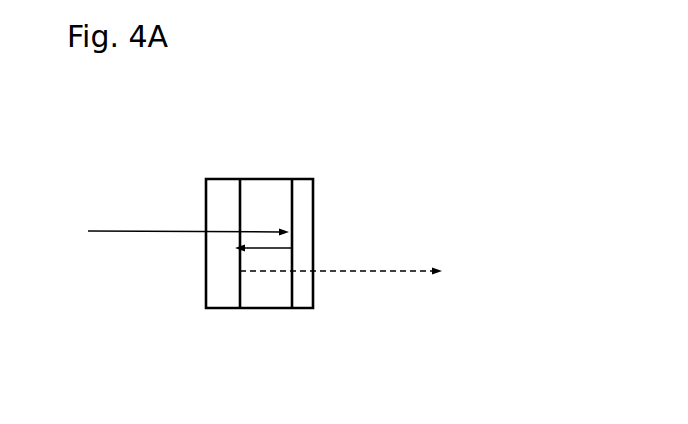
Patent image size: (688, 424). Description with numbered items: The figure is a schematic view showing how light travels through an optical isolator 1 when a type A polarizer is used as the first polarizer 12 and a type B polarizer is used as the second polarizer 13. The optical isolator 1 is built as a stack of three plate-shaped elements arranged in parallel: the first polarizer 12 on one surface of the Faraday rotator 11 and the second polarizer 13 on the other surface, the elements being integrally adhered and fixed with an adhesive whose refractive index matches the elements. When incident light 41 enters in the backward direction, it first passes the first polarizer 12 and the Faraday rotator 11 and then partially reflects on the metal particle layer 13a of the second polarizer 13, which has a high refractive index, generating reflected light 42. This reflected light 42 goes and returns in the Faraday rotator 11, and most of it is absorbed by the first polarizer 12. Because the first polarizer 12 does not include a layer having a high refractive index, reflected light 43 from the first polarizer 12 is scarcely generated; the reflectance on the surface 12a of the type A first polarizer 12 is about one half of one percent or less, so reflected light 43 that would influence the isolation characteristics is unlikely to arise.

The optical isolator 1 is at (434, 75).
The Faraday rotator 11 is at (270, 195).
The first polarizer 12 is at (213, 205).
The surface of the first polarizer 12a is at (240, 200).
The second polarizer 13 is at (305, 208).
The metal particle layer 13a is at (292, 199).
The incident light 41 is at (175, 233).
The reflected light 42 is at (262, 248).
The reflected light 43 is at (380, 272).